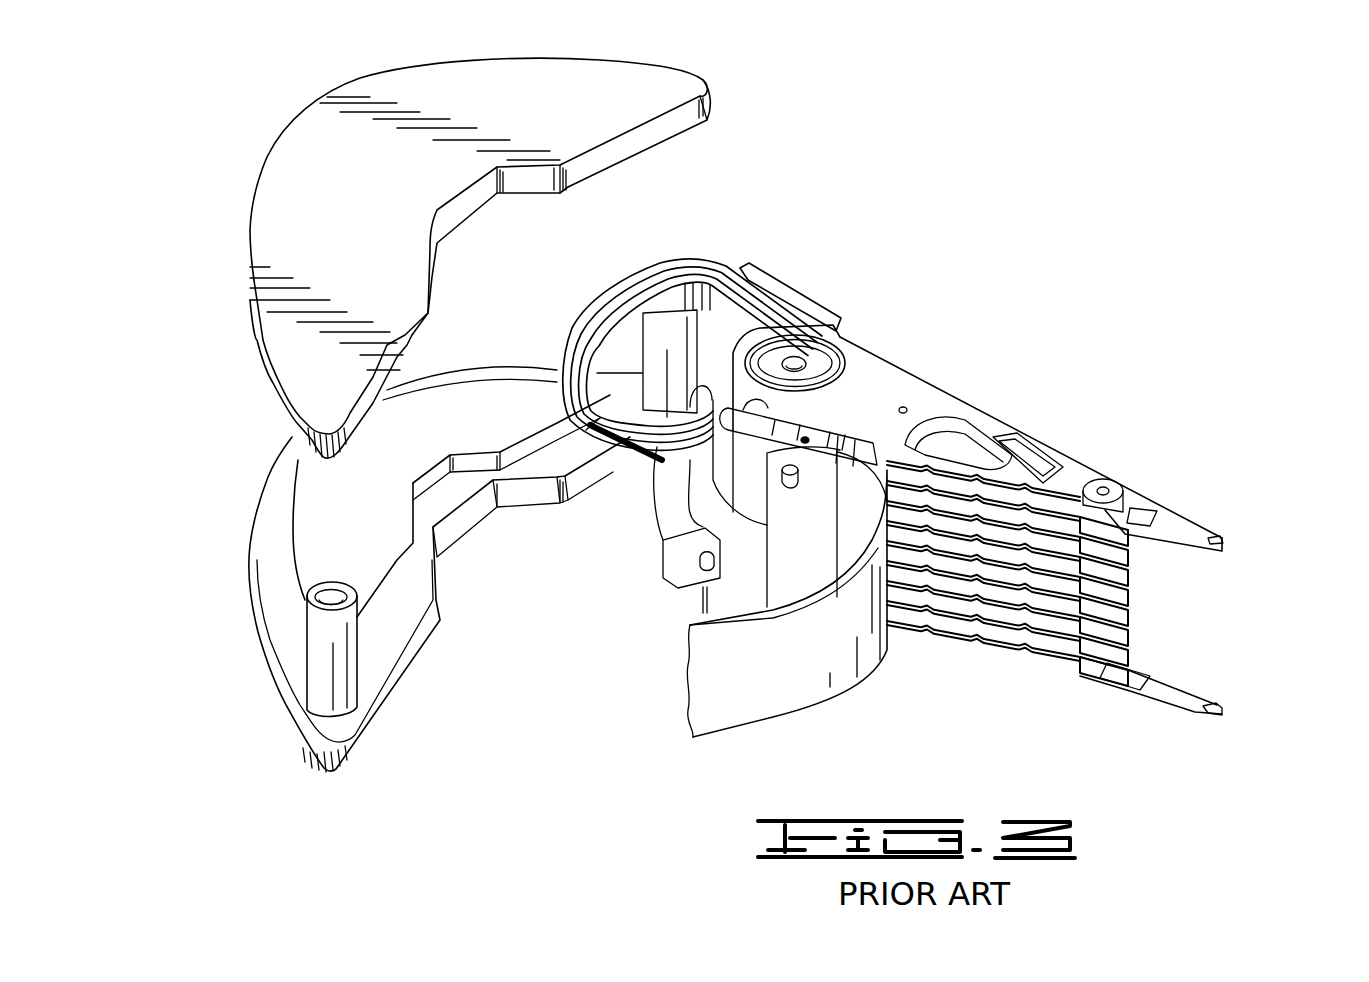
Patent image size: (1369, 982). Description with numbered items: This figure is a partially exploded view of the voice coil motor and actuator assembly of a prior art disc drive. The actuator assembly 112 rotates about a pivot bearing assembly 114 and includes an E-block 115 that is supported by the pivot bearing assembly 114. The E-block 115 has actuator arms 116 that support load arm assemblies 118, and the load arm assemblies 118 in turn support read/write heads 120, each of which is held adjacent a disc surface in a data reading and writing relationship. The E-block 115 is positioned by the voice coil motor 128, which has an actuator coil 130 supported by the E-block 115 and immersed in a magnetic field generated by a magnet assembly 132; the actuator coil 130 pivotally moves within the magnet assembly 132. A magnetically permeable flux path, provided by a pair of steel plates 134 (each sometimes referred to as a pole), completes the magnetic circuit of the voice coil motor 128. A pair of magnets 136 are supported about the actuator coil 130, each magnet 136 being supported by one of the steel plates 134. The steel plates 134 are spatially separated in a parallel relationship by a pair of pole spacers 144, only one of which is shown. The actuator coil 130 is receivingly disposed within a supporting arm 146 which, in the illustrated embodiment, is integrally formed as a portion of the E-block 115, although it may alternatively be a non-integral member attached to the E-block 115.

The actuator assembly 112 is at (1018, 524).
The pivot bearing assembly 114 is at (823, 359).
The E-block 115 is at (887, 387).
The actuator arms 116 is at (947, 612).
The load arm assemblies 118 is at (1157, 503).
The read/write heads 120 is at (1217, 537).
The voice coil motor 128 is at (716, 76).
The actuator coil 130 is at (710, 253).
The magnet assembly 132 is at (377, 537).
The steel plates 134 is at (267, 157).
The magnets 136 is at (293, 528).
The pole spacers 144 is at (303, 670).
The supporting arm 146 is at (753, 273).